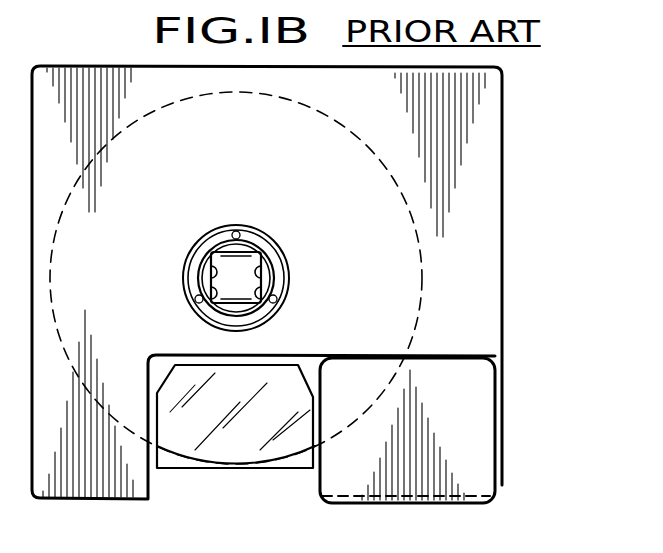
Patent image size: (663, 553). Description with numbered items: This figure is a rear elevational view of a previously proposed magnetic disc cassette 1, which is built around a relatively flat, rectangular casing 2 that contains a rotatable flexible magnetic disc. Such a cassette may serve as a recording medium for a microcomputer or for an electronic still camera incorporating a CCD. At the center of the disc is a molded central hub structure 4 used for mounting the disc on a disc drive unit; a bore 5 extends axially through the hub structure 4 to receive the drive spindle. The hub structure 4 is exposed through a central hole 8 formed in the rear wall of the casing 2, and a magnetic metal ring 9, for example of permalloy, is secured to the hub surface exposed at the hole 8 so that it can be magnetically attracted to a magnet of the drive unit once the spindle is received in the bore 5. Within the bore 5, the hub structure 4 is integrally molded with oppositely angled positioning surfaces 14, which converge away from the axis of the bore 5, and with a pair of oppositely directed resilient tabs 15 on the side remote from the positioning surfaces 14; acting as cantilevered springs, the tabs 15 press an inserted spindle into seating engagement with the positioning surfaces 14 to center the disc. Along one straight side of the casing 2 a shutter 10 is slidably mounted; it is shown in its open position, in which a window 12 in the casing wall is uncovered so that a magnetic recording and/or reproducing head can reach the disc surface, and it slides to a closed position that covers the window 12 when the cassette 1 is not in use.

The magnetic disc cassette 1 is at (512, 96).
The casing 2 is at (493, 122).
The central hub structure 4 is at (205, 248).
The bore 5 is at (232, 268).
The central hole 8 is at (268, 249).
The magnetic metal ring 9 is at (256, 309).
The shutter 10 is at (482, 478).
The window 12 is at (158, 452).
The positioning surfaces 14 is at (262, 279).
The resilient tabs 15 is at (212, 279).